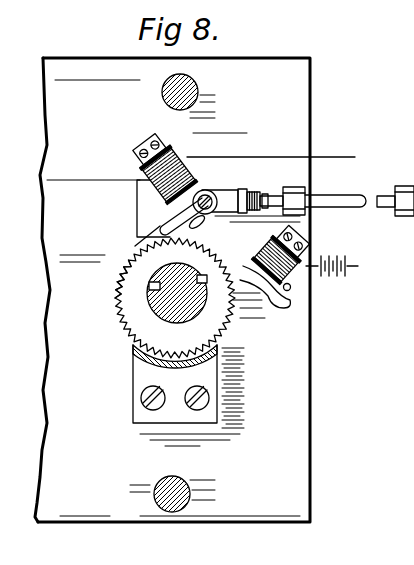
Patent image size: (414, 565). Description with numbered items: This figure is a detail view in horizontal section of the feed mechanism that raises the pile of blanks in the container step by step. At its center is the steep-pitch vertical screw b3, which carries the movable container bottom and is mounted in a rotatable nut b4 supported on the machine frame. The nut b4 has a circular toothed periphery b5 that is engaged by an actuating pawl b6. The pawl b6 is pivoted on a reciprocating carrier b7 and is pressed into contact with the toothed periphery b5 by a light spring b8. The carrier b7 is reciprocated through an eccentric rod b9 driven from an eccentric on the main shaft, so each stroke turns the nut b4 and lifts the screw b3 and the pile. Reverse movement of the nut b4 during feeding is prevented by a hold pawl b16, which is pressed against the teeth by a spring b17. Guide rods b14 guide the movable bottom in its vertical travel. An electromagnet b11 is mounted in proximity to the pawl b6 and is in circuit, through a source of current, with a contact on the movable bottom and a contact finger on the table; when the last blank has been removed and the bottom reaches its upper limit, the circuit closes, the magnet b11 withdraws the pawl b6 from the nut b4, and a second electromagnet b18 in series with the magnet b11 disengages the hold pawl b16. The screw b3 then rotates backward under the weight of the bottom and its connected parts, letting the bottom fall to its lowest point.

The guide rods b14 is at (197, 80).
The electromagnet b11 is at (140, 180).
The light spring b8 is at (208, 170).
The reciprocating carrier b7 is at (233, 196).
The eccentric rod b9 is at (361, 182).
The actuating pawl b6 is at (172, 218).
The rotatable nut b4 is at (130, 284).
The toothed periphery b5 is at (123, 325).
The vertical screw b3 is at (187, 307).
The electromagnet b18 is at (302, 260).
The spring b17 is at (302, 276).
The hold pawl b16 is at (255, 318).